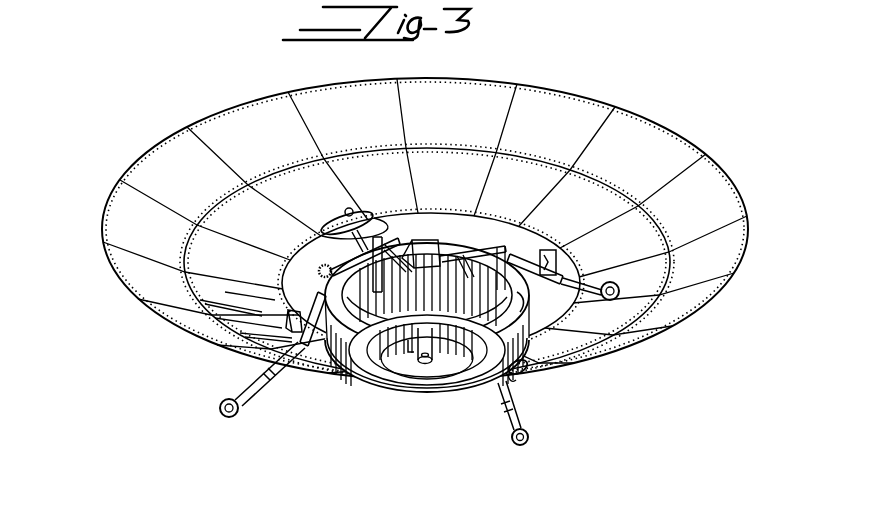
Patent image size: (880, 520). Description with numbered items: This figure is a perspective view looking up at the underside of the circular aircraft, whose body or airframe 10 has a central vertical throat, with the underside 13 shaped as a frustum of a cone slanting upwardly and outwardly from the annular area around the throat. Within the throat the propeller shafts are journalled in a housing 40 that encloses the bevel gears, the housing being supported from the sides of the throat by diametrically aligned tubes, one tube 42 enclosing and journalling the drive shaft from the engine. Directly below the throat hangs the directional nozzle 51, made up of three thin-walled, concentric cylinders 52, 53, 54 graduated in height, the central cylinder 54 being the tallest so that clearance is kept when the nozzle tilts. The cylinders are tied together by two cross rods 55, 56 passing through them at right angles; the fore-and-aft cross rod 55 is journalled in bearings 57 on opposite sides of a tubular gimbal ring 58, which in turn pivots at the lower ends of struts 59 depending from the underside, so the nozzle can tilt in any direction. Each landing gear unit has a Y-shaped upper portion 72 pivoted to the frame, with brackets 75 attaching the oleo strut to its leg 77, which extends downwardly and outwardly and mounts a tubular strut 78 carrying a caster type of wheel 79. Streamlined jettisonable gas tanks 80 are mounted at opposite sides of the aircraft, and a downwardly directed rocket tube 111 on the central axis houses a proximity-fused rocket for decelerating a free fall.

The body or airframe of an aircraft 10 is at (673, 145).
The underside 13 is at (742, 257).
The housing 40 is at (425, 253).
The tube 42 is at (470, 251).
The directional nozzle 51 is at (377, 380).
The thin-walled cylinder 52 is at (366, 381).
The thin-walled cylinder 53 is at (421, 389).
The thin-walled cylinder 54 is at (445, 373).
The cross rod 55 is at (385, 331).
The cross rod 56 is at (437, 331).
The bearings 57 is at (388, 285).
The tubular gimbal ring 58 is at (524, 305).
The struts 59 is at (395, 279).
The Y-shaped upper portion 72 is at (533, 253).
The brackets 75 is at (544, 275).
The leg 77 is at (291, 363).
The tubular strut 78 is at (252, 393).
The caster type of wheel 79 is at (233, 417).
The jettisonable gas tanks 80 is at (362, 213).
The rocket tube 111 is at (410, 352).